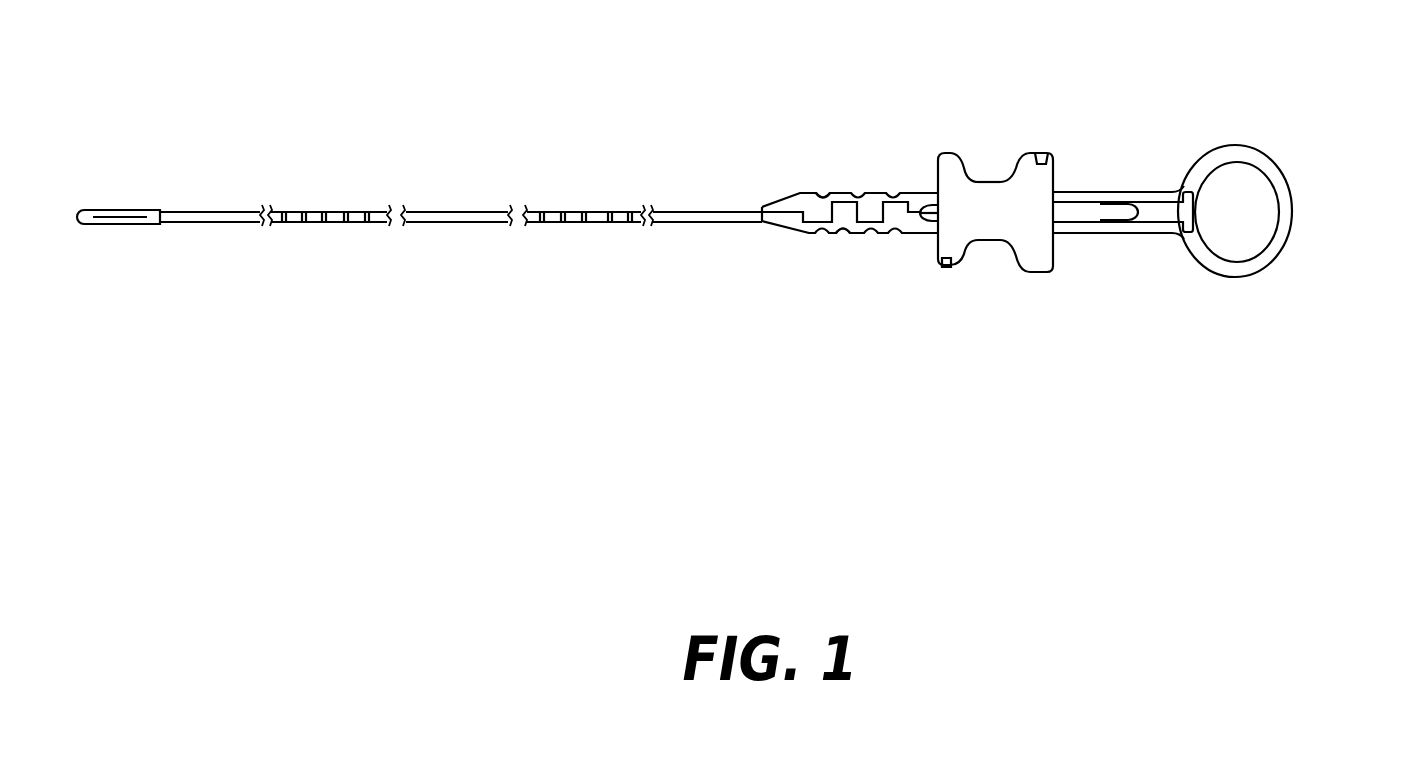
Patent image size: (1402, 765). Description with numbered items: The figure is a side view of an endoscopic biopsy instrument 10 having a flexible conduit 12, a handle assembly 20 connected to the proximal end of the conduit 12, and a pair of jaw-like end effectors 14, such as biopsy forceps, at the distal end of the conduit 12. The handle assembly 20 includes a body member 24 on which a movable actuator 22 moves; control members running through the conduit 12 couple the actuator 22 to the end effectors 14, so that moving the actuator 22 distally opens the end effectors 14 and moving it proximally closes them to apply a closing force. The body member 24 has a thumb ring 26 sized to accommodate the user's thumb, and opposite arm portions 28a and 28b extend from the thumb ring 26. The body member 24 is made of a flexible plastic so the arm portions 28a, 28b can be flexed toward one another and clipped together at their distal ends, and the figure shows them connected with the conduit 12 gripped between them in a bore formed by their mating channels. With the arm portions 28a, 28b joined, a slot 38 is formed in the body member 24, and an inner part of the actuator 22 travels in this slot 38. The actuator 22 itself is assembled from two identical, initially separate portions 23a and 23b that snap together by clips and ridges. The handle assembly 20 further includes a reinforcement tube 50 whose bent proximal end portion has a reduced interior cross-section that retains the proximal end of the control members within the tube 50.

The endoscopic biopsy instrument 10 is at (889, 88).
The flexible conduit 12 is at (453, 211).
The jaw-like end effectors 14 is at (112, 210).
The handle assembly 20 is at (1105, 183).
The movable actuator 22 is at (990, 242).
The actuator portion 23a is at (989, 182).
The actuator portion 23b is at (1048, 153).
The body member 24 is at (783, 220).
The thumb ring 26 is at (1270, 152).
The arm portion 28a is at (812, 203).
The arm portion 28b is at (843, 221).
The slot 38 is at (1107, 212).
The reinforcement tube 50 is at (933, 224).